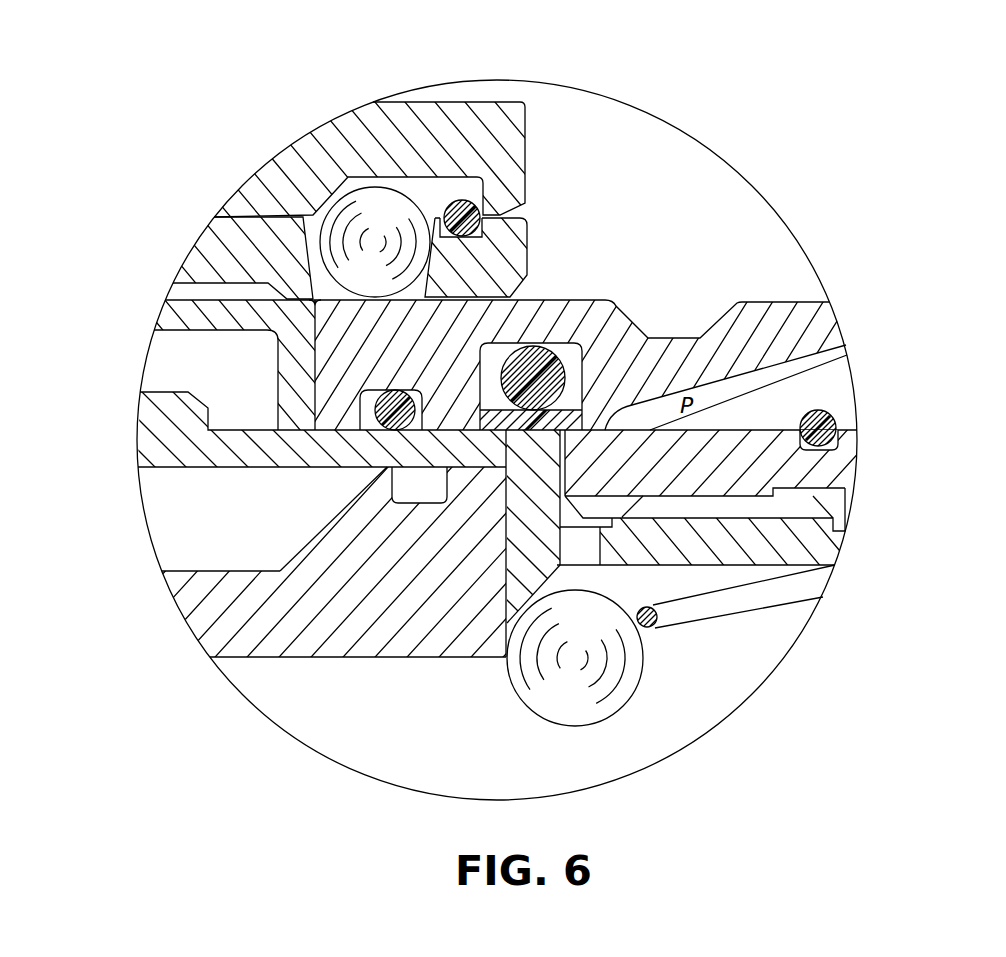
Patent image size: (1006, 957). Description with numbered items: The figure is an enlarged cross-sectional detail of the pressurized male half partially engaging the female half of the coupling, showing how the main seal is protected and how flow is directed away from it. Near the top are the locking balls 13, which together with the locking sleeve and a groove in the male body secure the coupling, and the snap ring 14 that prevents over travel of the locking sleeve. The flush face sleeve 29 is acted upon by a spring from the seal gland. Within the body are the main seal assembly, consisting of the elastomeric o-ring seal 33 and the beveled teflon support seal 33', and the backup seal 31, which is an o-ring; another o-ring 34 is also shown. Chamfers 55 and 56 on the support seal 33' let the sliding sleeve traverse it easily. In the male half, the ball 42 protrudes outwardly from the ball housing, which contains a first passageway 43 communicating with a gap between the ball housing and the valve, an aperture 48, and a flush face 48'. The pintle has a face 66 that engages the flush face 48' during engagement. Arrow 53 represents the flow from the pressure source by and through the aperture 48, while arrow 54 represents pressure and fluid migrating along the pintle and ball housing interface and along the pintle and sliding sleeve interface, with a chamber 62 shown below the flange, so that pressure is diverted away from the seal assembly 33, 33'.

The locking balls 13 is at (372, 227).
The snap ring 14 is at (463, 213).
The flush face sleeve 29 is at (292, 322).
The backup seal 31 is at (393, 410).
The seal 33 is at (626, 263).
The support seal 33' is at (667, 286).
The O-ring seal 34 is at (820, 427).
The ball 42 is at (583, 668).
The first passageway 43 is at (592, 545).
The aperture 48 is at (483, 640).
The flush face 48' is at (470, 621).
The direction of flow 53 is at (570, 497).
The pressure and fluid migration 54 is at (372, 471).
The chamfer 55 is at (822, 337).
The chamfer 56 is at (280, 571).
The chamber 62 is at (207, 541).
The face 66 is at (520, 643).